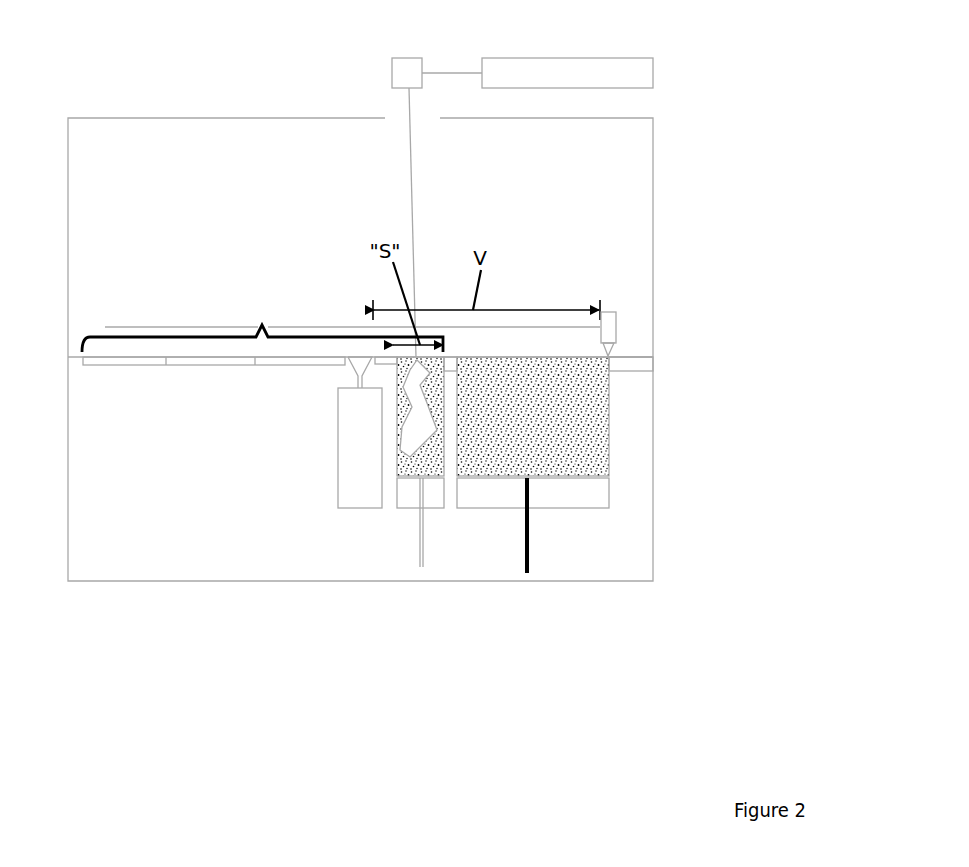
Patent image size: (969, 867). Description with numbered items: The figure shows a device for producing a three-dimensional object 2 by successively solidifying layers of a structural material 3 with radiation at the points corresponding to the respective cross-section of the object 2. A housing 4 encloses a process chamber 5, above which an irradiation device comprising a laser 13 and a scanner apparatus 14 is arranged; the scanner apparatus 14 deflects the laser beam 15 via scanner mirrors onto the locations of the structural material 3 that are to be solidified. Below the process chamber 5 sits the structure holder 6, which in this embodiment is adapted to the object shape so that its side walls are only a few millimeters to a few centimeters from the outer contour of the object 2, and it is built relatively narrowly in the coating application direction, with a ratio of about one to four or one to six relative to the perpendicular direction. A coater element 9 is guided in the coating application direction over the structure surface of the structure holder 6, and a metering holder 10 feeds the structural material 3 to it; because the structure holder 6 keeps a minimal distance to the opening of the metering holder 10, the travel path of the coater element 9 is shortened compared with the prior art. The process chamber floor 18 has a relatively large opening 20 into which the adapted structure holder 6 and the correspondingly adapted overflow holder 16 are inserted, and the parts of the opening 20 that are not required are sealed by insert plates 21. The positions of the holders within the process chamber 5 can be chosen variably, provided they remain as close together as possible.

The three-dimensional object 2 is at (418, 435).
The structural material 3 is at (576, 446).
The housing 4 is at (655, 190).
The process chamber 5 is at (514, 198).
The structure holder 6 is at (432, 505).
The coater element 9 is at (613, 348).
The metering holder 10 is at (610, 428).
The laser 13 is at (573, 75).
The scanner apparatus 14 is at (400, 67).
The laser beam 15 is at (452, 72).
The overflow holder 16 is at (351, 498).
The process chamber floor 18 is at (628, 357).
The opening 20 is at (262, 322).
The insert plates 21 is at (298, 360).